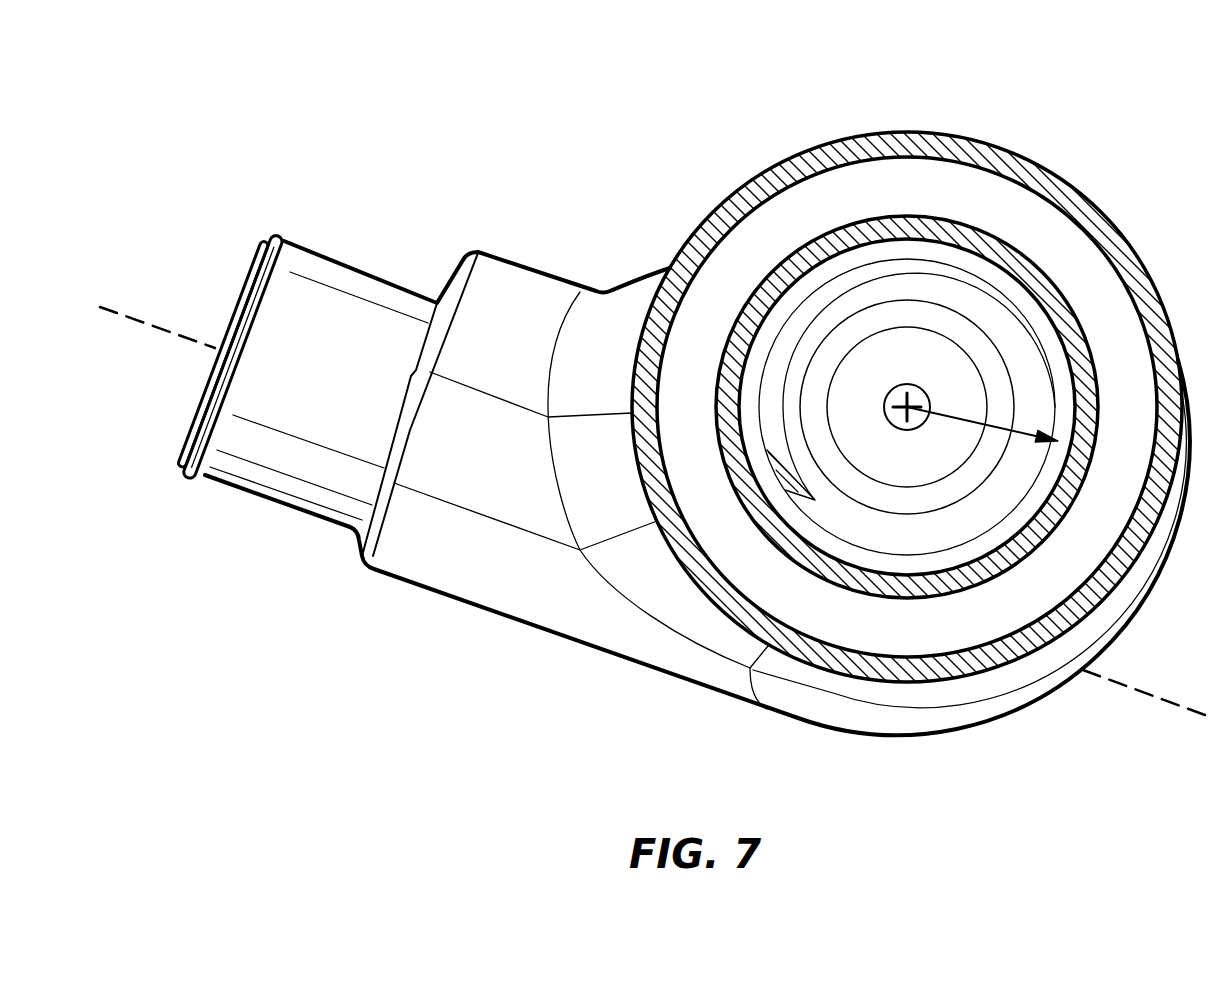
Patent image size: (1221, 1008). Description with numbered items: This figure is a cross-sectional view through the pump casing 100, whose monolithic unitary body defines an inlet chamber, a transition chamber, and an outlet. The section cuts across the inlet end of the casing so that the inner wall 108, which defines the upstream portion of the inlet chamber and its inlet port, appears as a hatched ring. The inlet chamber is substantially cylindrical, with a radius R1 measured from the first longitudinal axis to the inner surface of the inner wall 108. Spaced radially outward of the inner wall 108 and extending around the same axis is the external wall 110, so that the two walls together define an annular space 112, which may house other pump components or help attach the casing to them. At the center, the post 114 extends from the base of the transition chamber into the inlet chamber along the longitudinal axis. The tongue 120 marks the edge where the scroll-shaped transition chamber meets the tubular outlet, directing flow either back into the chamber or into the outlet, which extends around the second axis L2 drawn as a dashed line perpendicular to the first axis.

The pump casing 100 is at (631, 398).
The inner wall 108 is at (767, 273).
The external wall 110 is at (782, 160).
The annular space 112 is at (993, 207).
The post 114 is at (906, 382).
The tongue 120 is at (792, 489).
The second axis L2 is at (135, 318).
The radius of inlet chamber R1 is at (982, 412).